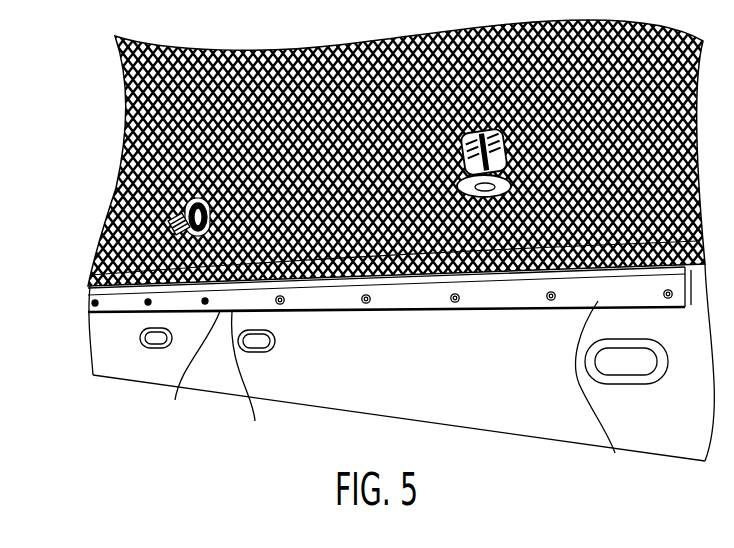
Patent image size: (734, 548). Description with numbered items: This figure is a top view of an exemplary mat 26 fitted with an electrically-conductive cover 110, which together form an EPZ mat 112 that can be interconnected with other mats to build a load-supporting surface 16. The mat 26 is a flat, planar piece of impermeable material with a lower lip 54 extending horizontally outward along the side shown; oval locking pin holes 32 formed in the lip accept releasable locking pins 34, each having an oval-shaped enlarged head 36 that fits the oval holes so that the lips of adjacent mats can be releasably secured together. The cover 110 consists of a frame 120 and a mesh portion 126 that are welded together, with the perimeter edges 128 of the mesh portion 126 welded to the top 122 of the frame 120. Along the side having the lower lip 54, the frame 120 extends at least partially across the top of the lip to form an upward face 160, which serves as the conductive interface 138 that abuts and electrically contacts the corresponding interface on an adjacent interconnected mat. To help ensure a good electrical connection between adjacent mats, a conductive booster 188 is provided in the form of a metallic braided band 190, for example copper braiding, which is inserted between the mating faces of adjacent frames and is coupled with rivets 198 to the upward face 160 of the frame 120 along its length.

The load-supporting surface 16 is at (403, 387).
The mat 26 is at (502, 432).
The locking pin hole 32 is at (148, 341).
The locking pin 34 is at (172, 212).
The enlarged head 36 is at (202, 198).
The lower lip 54 is at (102, 335).
The electrically-conductive cover 110 is at (390, 342).
The EPZ mat 112 is at (535, 433).
The frame 120 is at (685, 295).
The top of the frame 122 is at (528, 266).
The mesh portion 126 is at (425, 258).
The perimeter edges 128 is at (483, 260).
The conductive interface 138 is at (190, 372).
The upward face 160 is at (250, 378).
The conductive booster 188 is at (607, 397).
The metallic braided band 190 is at (400, 299).
The rivet 198 is at (271, 297).